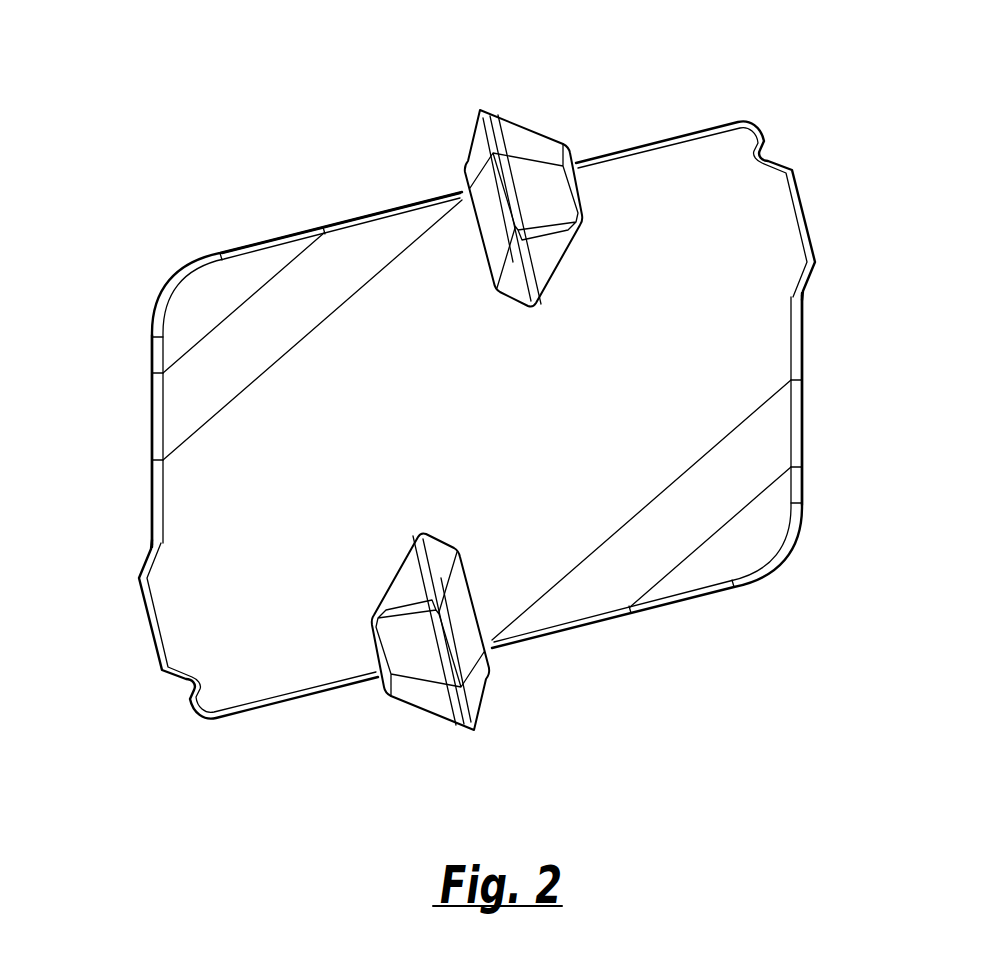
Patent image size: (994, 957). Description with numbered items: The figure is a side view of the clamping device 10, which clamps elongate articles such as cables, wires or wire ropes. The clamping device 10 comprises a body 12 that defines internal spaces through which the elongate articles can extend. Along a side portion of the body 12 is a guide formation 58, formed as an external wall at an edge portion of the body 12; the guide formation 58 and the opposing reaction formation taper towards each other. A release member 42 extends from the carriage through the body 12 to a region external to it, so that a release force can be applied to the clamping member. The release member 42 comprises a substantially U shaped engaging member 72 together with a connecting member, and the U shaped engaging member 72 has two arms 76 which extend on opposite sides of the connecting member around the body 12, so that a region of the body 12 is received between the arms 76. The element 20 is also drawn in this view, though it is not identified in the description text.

The clamping device 10 is at (217, 172).
The body 12 is at (806, 490).
The side wall 20 is at (806, 333).
The guide formation 58 is at (310, 227).
The release member 42 is at (479, 98).
The U shaped engaging member 72 is at (548, 140).
The arms 76 is at (540, 243).